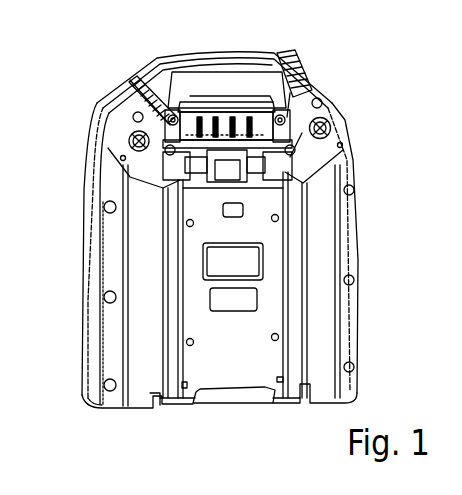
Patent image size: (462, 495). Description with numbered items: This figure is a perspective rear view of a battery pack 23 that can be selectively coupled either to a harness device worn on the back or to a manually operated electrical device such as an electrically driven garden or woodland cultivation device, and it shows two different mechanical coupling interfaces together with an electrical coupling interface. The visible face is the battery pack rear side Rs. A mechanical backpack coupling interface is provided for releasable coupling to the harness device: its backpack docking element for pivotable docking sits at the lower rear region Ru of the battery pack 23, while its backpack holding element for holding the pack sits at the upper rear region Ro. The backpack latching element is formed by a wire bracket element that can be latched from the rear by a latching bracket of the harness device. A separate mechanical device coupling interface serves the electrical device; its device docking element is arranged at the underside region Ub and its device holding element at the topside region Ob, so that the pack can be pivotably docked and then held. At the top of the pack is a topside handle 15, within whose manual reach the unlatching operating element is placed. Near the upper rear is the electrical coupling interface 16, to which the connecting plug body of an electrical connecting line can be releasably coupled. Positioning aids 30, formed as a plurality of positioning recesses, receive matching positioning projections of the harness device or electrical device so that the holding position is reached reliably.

The topside handle 15 is at (188, 65).
The topside region Ob is at (202, 102).
The electrical coupling interface 16 is at (289, 115).
The positioning aid 30 is at (129, 141).
The upper rear region Ro is at (313, 160).
The battery pack 23 is at (355, 264).
The battery pack rear side Rs is at (272, 312).
The underside region Ub is at (187, 408).
The lower rear region Ru is at (224, 383).